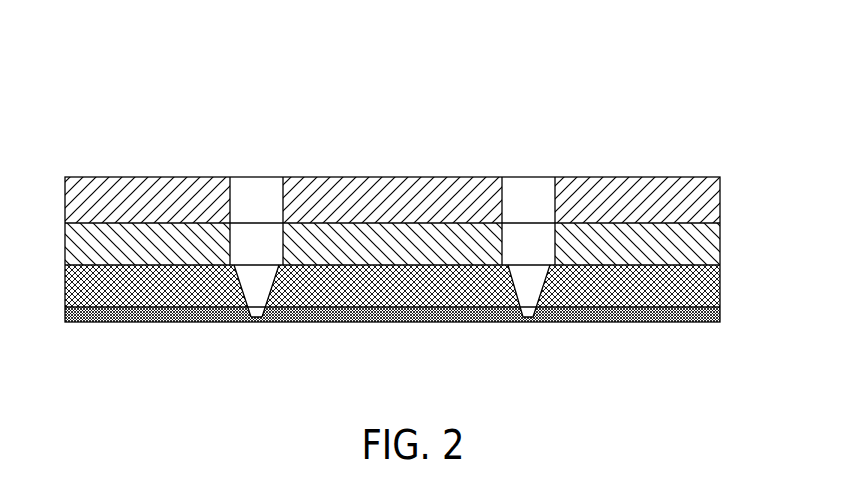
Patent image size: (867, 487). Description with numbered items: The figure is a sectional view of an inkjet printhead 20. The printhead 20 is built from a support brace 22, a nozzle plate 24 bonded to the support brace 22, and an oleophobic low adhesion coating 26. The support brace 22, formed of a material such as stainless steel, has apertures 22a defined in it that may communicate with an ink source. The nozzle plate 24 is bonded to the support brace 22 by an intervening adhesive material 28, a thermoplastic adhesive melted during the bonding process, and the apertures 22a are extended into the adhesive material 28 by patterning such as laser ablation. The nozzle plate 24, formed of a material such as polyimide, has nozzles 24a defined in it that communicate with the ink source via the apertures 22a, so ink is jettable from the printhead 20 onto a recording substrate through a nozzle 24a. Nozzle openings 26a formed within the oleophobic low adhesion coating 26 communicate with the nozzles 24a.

The inkjet printhead 20 is at (680, 124).
The support brace 22 is at (708, 199).
The apertures 22a is at (528, 203).
The adhesive material 28 is at (704, 245).
The nozzle plate 24 is at (706, 288).
The nozzles 24a is at (523, 287).
The oleophobic low adhesion coating 26 is at (708, 315).
The nozzle openings 26a is at (533, 324).